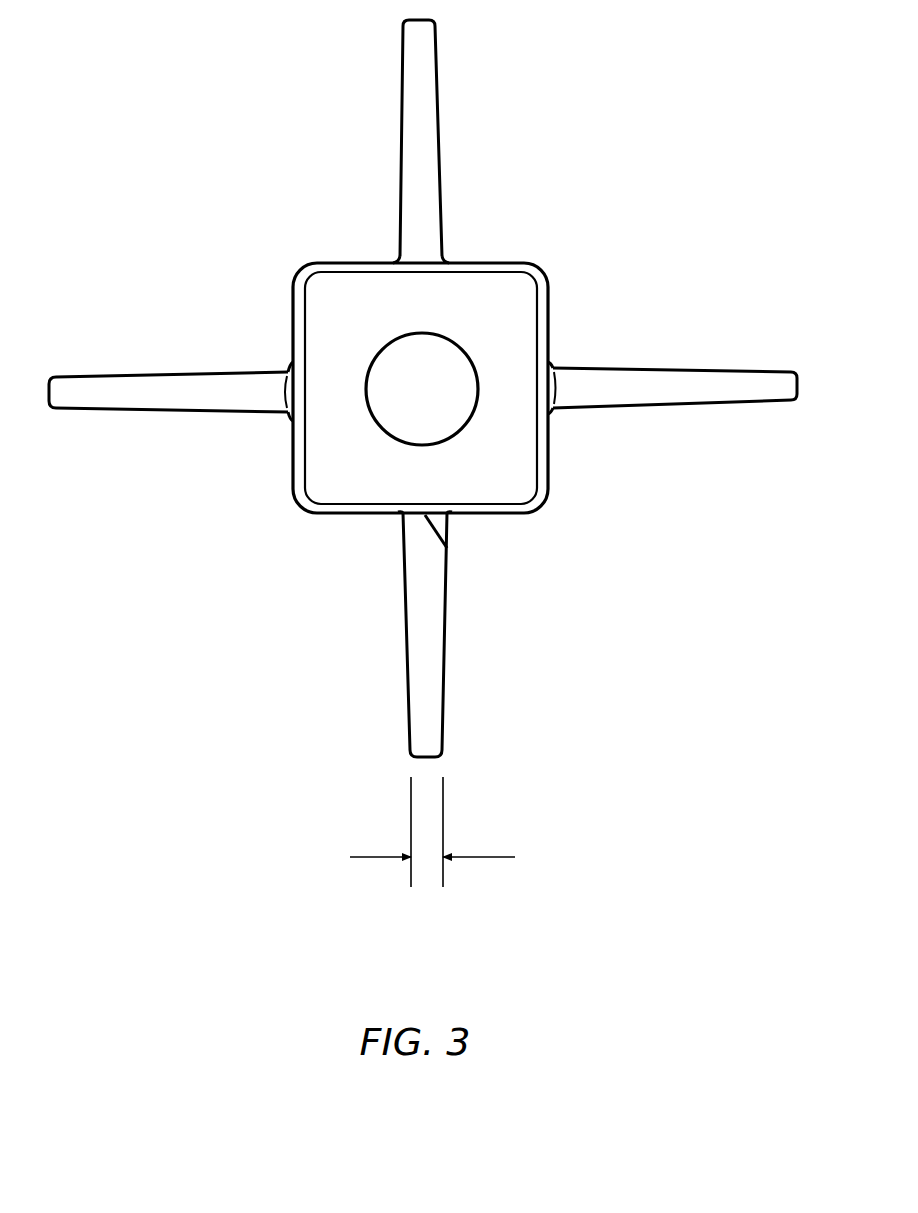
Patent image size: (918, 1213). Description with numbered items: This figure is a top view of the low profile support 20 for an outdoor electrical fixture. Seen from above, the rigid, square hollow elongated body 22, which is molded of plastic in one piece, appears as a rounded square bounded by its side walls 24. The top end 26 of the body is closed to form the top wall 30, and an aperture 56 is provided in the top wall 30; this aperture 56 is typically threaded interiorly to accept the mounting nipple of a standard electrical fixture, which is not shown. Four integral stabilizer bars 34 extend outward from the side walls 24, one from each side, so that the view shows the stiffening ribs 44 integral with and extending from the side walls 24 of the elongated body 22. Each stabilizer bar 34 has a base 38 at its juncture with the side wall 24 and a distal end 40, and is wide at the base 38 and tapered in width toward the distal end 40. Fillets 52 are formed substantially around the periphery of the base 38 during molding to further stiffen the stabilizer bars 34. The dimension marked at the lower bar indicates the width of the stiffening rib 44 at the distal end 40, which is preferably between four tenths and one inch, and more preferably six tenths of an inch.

The low profile support 20 is at (430, 453).
The hollow elongated body 22 is at (460, 359).
The side walls 24 is at (337, 515).
The top end 26 is at (475, 280).
The top wall 30 is at (482, 337).
The stabilizer bars 34 is at (573, 562).
The base 38 is at (445, 513).
The distal end 40 is at (425, 757).
The stiffening rib 44 is at (437, 630).
The fillets 52 is at (442, 547).
The aperture 56 is at (398, 355).